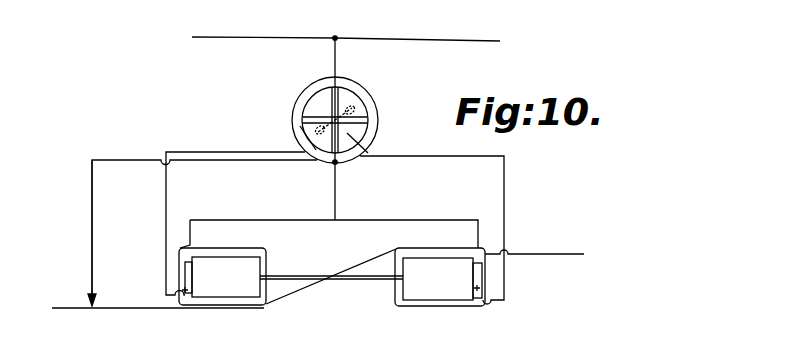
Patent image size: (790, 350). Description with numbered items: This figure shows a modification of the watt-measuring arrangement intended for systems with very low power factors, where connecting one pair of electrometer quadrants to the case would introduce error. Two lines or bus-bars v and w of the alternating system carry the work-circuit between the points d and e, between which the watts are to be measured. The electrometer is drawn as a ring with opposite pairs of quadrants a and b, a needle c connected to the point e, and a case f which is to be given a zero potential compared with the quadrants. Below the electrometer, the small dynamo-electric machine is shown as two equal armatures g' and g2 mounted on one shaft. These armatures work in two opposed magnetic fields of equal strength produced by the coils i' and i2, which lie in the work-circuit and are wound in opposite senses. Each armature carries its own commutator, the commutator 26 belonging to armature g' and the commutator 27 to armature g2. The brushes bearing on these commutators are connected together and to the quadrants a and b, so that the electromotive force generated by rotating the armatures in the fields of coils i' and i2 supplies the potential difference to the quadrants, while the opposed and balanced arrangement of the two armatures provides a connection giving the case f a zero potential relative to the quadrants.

The line w is at (263, 24).
The point e is at (416, 25).
The quadrants a is at (362, 132).
The quadrants b is at (302, 129).
The needle c is at (352, 108).
The case f is at (338, 166).
The point d is at (88, 248).
The line v is at (152, 322).
The coil i' is at (222, 294).
The coil i2 is at (437, 306).
The armature g' is at (226, 277).
The armature g2 is at (438, 279).
The commutator 26 is at (193, 268).
The commutator 27 is at (476, 277).